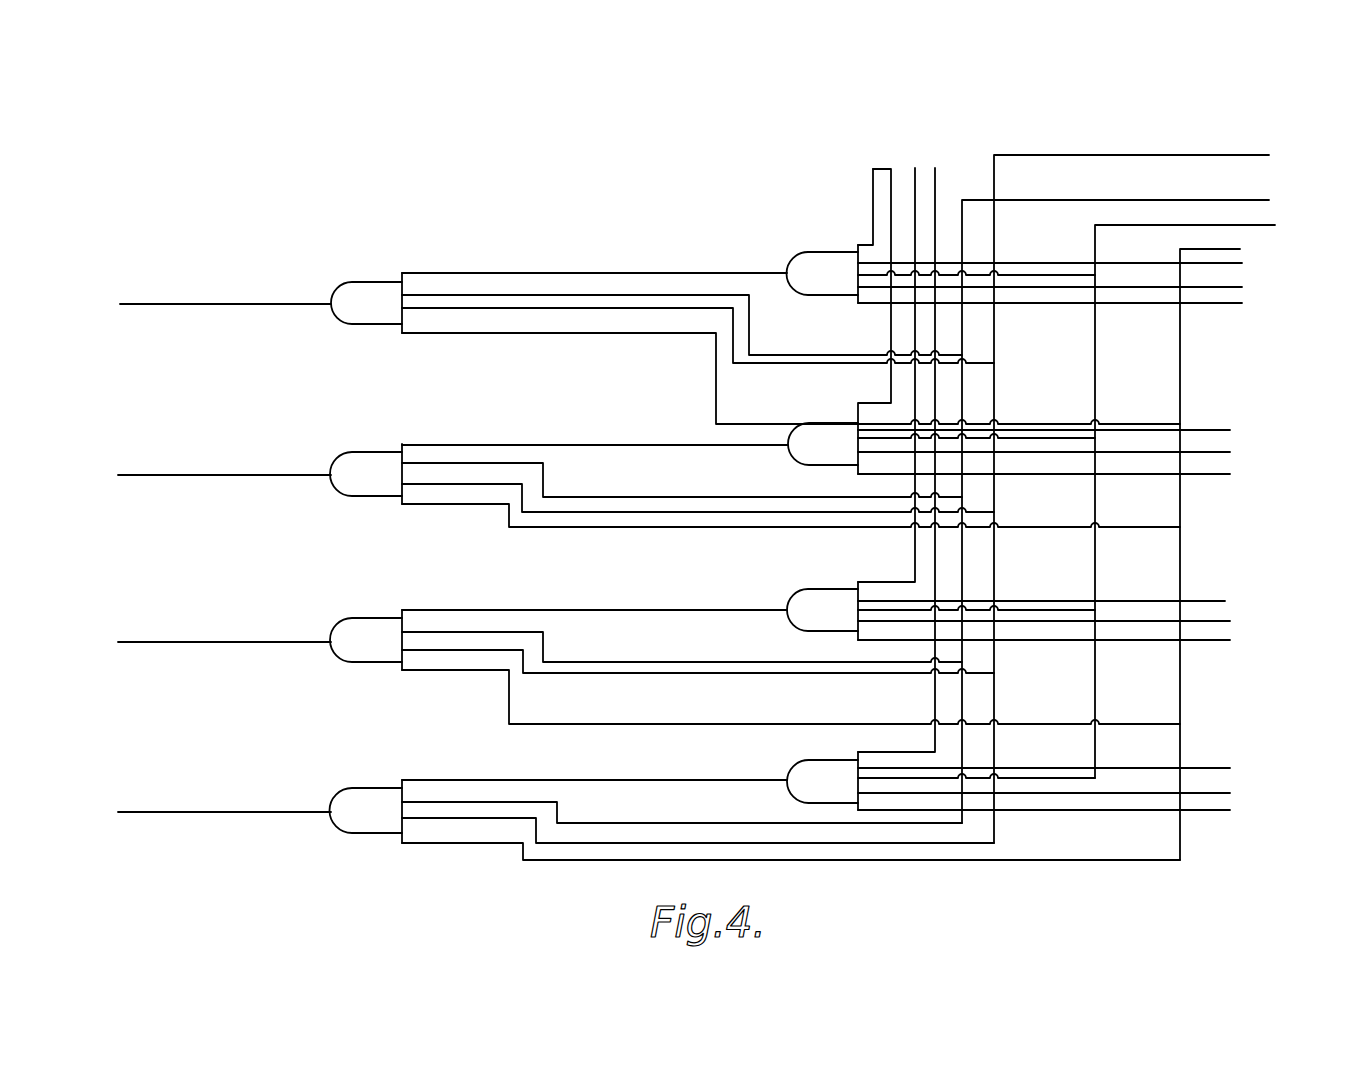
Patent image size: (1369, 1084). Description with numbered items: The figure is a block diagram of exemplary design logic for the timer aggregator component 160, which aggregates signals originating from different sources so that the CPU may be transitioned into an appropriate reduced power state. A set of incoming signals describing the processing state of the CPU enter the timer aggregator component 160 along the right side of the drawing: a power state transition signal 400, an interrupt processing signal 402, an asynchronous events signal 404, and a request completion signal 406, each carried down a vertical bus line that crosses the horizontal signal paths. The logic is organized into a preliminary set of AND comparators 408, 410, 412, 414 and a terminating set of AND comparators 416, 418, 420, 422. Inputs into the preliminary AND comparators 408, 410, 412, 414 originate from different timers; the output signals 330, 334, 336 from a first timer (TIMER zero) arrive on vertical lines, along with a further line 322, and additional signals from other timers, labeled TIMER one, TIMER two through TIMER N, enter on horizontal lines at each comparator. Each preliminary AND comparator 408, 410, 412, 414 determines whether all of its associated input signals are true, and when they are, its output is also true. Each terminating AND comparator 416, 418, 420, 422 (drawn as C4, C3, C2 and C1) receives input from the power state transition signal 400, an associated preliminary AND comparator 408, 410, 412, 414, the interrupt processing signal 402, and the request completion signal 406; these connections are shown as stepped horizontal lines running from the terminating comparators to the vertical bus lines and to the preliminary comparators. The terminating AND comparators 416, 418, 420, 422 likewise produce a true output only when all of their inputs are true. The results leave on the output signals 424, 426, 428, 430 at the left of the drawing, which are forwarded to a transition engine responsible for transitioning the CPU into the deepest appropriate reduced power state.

The timer aggregator component 160 is at (165, 156).
The bus line 322 is at (873, 169).
The output signal 330 is at (873, 205).
The output signal 334 is at (914, 168).
The output signal 336 is at (935, 168).
The power state transition signal 400 is at (1269, 155).
The interrupt processing signal 402 is at (1269, 200).
The asynchronous events signal 404 is at (1275, 225).
The request completion signal 406 is at (1240, 249).
The preliminary AND comparator 408 is at (785, 263).
The preliminary AND comparator 410 is at (788, 465).
The preliminary AND comparator 412 is at (787, 600).
The preliminary AND comparator 414 is at (787, 770).
The terminating AND comparator 416 is at (333, 283).
The terminating AND comparator 418 is at (335, 453).
The terminating AND comparator 420 is at (338, 620).
The terminating AND comparator 422 is at (333, 798).
The output signal 424 is at (162, 303).
The output signal 426 is at (150, 474).
The output signal 428 is at (137, 642).
The output signal 430 is at (142, 812).